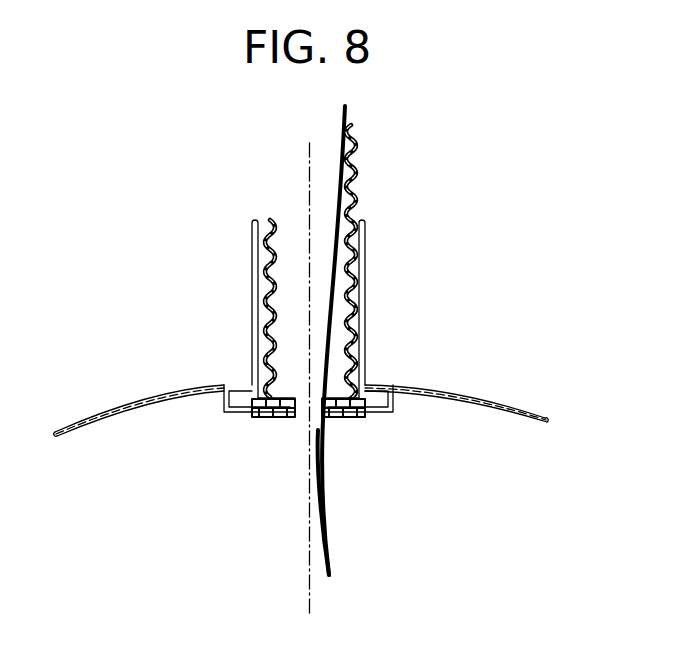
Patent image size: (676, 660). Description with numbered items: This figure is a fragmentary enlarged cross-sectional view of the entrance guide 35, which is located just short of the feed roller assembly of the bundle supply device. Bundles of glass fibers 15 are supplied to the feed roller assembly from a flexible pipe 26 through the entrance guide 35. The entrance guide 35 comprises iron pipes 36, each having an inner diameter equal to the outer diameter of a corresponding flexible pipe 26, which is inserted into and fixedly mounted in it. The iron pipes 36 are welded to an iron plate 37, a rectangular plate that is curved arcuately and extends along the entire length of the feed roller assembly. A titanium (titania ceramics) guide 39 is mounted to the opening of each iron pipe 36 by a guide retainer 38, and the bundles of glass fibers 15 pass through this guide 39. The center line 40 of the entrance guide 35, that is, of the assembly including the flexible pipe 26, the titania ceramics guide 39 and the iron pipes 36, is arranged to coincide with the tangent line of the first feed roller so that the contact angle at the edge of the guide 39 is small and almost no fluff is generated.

The bundles of glass fibers 15 is at (323, 527).
The flexible pipe 26 is at (358, 185).
The entrance guide 35 is at (446, 285).
The iron pipe 36 is at (366, 270).
The iron plate 37 is at (478, 396).
The guide retainer 38 is at (393, 402).
The titanium guide 39 is at (350, 417).
The center line 40 is at (310, 598).